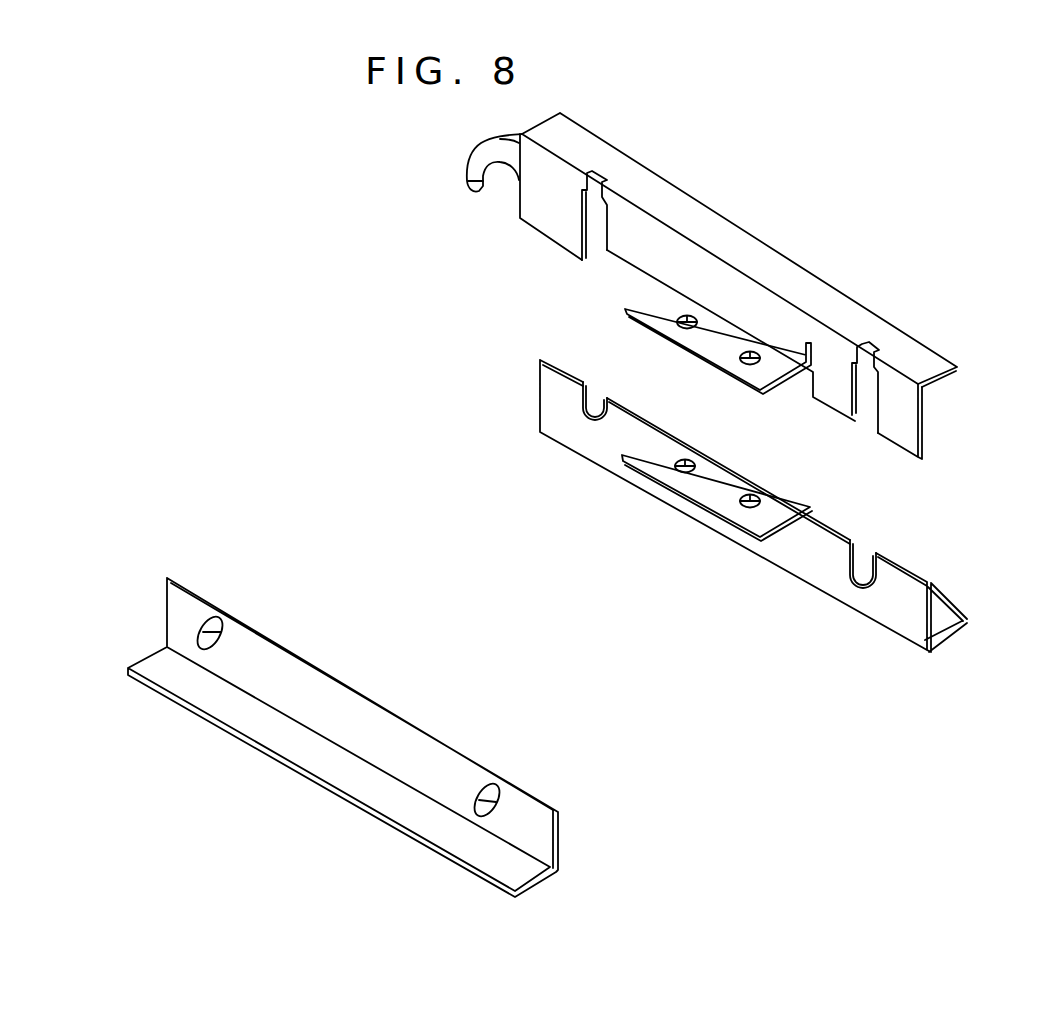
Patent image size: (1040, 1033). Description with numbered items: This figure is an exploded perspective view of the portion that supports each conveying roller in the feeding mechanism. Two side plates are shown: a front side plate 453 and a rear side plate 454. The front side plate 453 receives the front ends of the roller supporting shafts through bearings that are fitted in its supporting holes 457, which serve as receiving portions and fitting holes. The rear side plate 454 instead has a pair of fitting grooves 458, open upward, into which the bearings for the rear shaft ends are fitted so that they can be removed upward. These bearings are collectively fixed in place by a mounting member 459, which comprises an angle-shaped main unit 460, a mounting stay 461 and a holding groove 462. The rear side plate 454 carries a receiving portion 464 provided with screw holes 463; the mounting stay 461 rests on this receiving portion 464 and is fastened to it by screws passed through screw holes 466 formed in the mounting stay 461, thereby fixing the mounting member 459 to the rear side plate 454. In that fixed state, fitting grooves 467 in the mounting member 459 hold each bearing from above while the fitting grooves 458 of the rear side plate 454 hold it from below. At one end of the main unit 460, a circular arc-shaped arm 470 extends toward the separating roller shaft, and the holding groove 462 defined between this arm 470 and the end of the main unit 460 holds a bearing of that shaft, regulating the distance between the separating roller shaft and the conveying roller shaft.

The front side plate 453 is at (313, 741).
The rear side plate 454 is at (714, 540).
The supporting holes 457 is at (200, 637).
The fitting grooves 458 is at (595, 420).
The mounting member 459 is at (684, 286).
The angle-shaped main unit 460 is at (813, 300).
The mounting stay 461 is at (685, 369).
The holding groove 462 is at (493, 180).
The screw holes 463 is at (760, 497).
The receiving portion 464 is at (779, 523).
The screw holes 466 is at (687, 316).
The fitting grooves 467 is at (585, 222).
The circular arc-shaped arm 470 is at (466, 178).